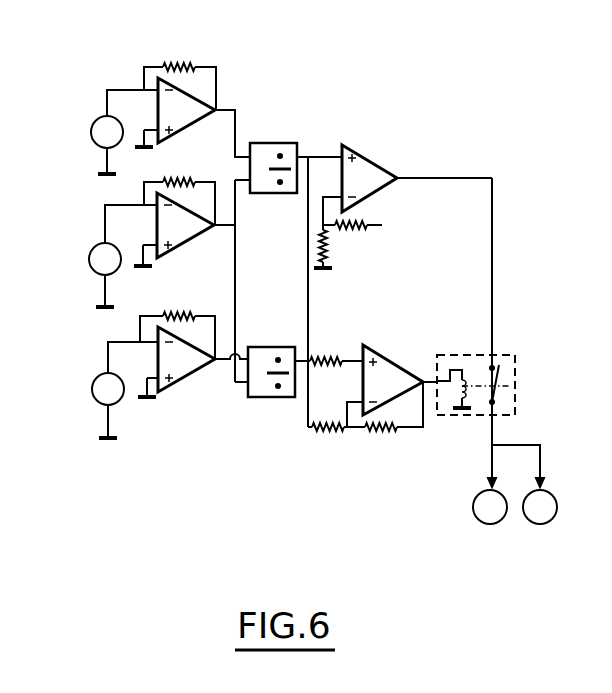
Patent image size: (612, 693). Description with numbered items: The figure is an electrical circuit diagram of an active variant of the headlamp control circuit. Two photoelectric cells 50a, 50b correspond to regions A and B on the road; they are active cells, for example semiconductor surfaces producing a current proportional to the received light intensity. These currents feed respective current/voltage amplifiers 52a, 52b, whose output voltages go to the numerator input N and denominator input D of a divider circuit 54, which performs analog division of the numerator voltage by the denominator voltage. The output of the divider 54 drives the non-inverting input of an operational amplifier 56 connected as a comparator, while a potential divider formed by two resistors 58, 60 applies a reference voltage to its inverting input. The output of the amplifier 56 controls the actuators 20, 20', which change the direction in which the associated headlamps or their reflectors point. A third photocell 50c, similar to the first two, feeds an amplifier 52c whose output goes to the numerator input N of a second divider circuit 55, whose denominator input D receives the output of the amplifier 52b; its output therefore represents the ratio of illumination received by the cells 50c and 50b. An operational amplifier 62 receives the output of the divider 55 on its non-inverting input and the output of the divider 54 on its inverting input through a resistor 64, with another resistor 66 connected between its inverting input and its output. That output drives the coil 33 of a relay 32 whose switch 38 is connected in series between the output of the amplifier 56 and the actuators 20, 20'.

The photoelectric cell 50a is at (92, 130).
The photoelectric cell 50b is at (92, 258).
The third photocell 50c is at (100, 390).
The current/voltage amplifier 52a is at (193, 100).
The current/voltage amplifier 52b is at (173, 223).
The amplifier 52c is at (183, 368).
The divider circuit 54 is at (281, 143).
The second divider circuit 55 is at (278, 347).
The operational amplifier 56 is at (367, 172).
The resistor 58 is at (365, 228).
The resistor 60 is at (327, 245).
The operational amplifier 62 is at (390, 368).
The resistor 64 is at (325, 430).
The resistor 66 is at (385, 430).
The relay 32 is at (513, 352).
The coil 33 is at (462, 378).
The switch 38 is at (495, 388).
The actuator 20 is at (473, 521).
The actuator 20' is at (543, 505).